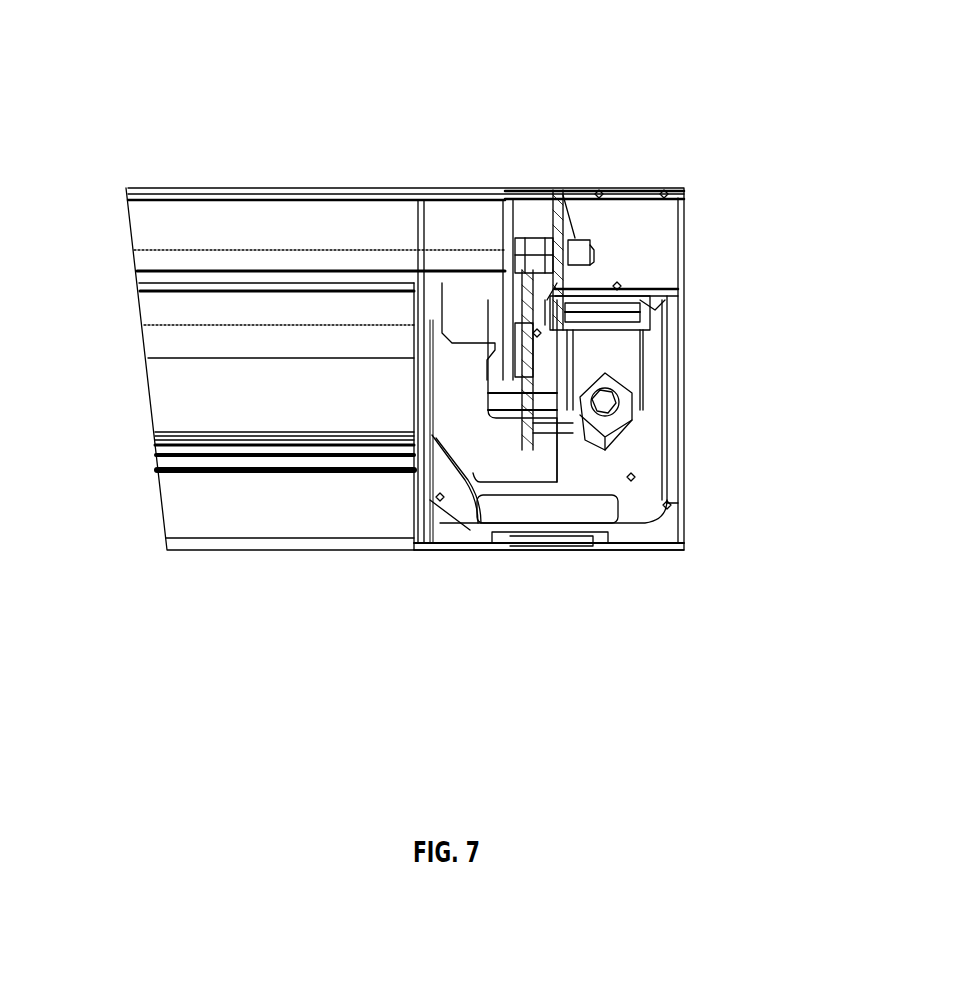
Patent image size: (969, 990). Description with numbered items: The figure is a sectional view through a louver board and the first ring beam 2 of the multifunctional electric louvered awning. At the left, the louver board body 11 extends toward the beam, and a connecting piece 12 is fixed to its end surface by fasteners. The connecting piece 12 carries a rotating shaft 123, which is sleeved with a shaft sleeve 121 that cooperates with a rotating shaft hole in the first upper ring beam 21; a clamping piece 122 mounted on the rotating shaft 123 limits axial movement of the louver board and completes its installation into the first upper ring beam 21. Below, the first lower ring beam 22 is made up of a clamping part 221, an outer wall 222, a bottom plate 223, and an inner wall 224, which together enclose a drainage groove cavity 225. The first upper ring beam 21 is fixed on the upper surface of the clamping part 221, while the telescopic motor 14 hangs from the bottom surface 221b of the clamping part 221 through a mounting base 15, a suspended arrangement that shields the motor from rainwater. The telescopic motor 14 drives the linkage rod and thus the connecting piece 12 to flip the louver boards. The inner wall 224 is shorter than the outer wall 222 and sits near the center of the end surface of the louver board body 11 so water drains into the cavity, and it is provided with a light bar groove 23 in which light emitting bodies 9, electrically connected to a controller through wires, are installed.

The first ring beam 2 is at (702, 257).
The light emitting bodies 9 is at (400, 457).
The louver board body 11 is at (232, 310).
The connecting piece 12 is at (505, 272).
The telescopic motor 14 is at (618, 413).
The mounting base 15 is at (625, 322).
The first upper ring beam 21 is at (650, 193).
The first lower ring beam 22 is at (685, 527).
The light bar groove 23 is at (400, 443).
The shaft sleeve 121 is at (580, 240).
The clamping piece 122 is at (527, 250).
The rotating shaft 123 is at (553, 250).
The clamping part 221 is at (625, 298).
The bottom surface of the clamping part 221b is at (625, 305).
The outer wall 222 is at (668, 440).
The bottom plate 223 is at (547, 488).
The inner wall 224 is at (438, 490).
The drainage groove cavity 225 is at (473, 452).